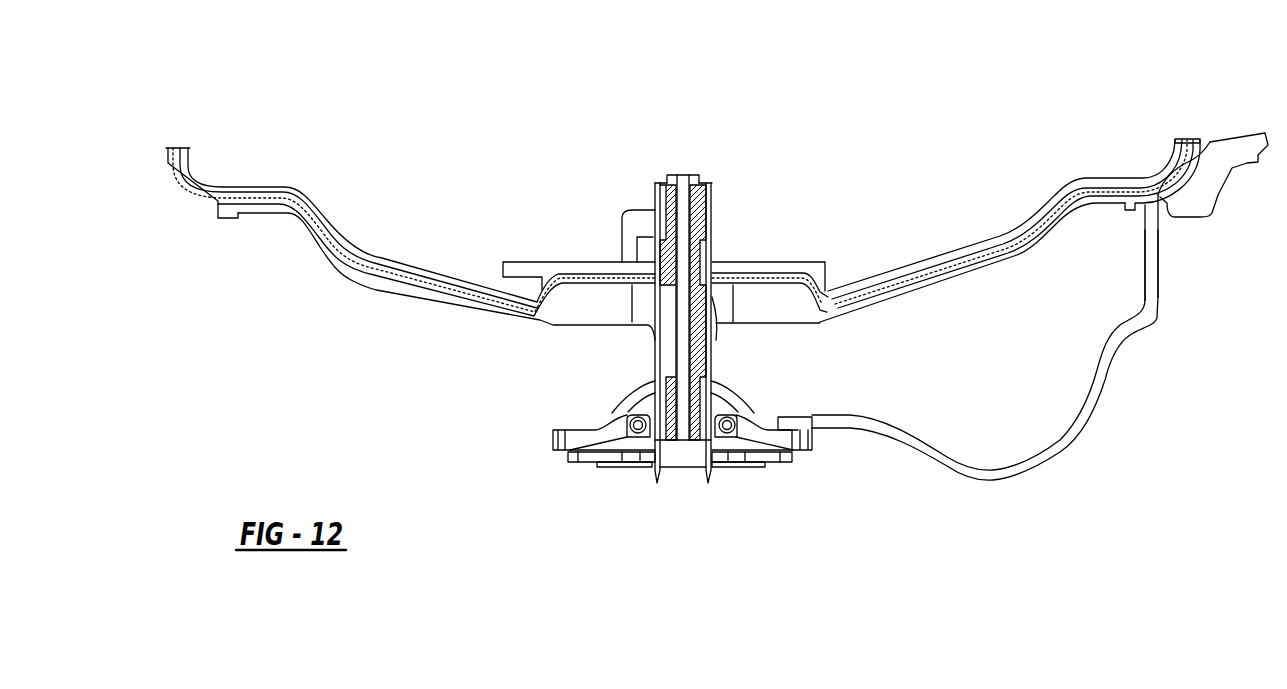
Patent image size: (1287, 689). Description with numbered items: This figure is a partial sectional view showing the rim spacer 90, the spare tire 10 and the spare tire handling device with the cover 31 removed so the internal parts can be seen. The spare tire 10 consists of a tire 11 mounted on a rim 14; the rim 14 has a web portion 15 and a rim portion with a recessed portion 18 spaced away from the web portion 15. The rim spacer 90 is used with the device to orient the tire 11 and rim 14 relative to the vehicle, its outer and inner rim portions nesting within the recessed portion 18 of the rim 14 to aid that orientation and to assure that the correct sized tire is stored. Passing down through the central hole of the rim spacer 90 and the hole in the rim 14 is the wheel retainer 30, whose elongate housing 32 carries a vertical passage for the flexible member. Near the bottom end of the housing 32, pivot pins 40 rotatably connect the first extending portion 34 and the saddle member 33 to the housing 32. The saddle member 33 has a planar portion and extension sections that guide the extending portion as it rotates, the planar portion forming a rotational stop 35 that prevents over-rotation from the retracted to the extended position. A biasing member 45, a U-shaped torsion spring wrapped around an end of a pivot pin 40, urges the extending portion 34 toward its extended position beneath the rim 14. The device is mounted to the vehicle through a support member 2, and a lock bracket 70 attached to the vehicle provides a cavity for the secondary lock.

The support member 2 is at (510, 263).
The spare tire 10 is at (1237, 117).
The tire 11 is at (1227, 147).
The rim 14 is at (1158, 297).
The web portion 15 is at (962, 473).
The recessed portion 18 is at (1200, 130).
The wheel retainer 30 is at (550, 440).
The cover 31 is at (711, 222).
The housing 32 is at (667, 181).
The saddle member 33 is at (729, 462).
The first extending portion 34 is at (809, 430).
The rotational stop 35 is at (559, 463).
The pivot pin 40 is at (628, 415).
The biasing member 45 is at (638, 438).
The lock bracket 70 is at (578, 240).
The rim spacer 90 is at (935, 232).